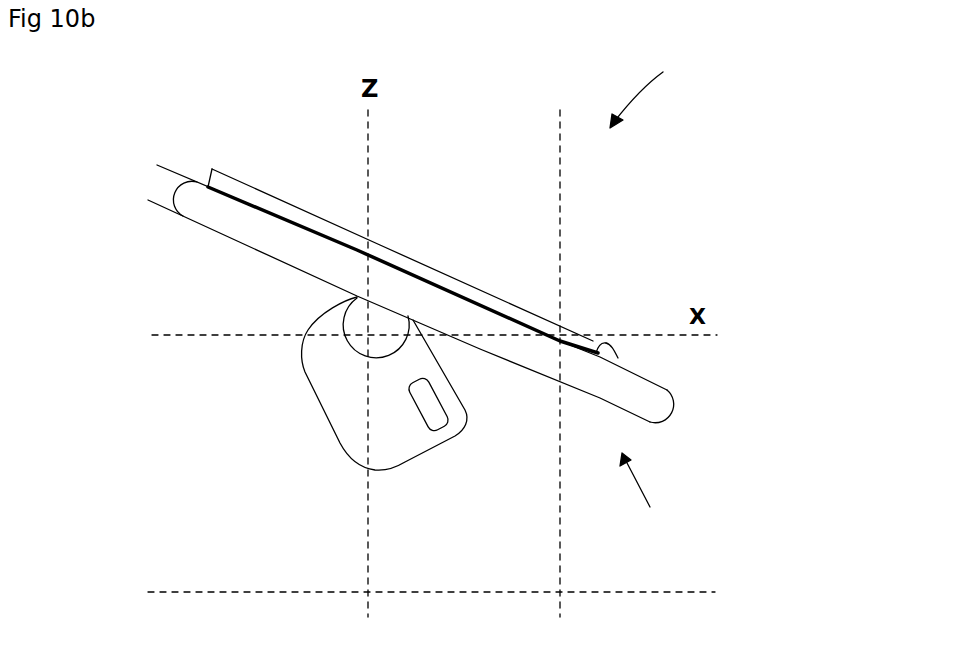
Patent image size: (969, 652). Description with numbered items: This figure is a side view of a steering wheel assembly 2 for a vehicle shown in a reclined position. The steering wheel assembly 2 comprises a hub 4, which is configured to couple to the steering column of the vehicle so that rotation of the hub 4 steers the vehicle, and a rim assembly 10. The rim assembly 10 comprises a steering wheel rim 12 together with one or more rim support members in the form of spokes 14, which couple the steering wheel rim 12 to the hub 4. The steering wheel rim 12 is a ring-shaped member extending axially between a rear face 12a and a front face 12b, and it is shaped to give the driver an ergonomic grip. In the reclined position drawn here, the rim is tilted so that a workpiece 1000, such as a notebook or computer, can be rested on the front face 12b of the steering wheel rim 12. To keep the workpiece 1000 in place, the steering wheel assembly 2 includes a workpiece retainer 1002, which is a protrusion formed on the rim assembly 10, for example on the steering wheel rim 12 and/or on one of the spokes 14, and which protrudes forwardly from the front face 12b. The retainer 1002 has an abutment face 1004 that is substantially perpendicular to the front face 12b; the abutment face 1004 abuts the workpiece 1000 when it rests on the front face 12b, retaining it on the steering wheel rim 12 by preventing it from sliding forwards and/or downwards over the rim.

The steering wheel assembly 2 is at (647, 89).
The hub 4 is at (338, 395).
The rim assembly 10 is at (649, 499).
The steering wheel rim 12 is at (418, 247).
The rear face 12a is at (160, 212).
The front face 12b is at (172, 167).
The spokes 14 is at (350, 318).
The workpiece 1000 is at (430, 275).
The workpiece retainer 1002 is at (613, 352).
The abutment face 1004 is at (593, 343).